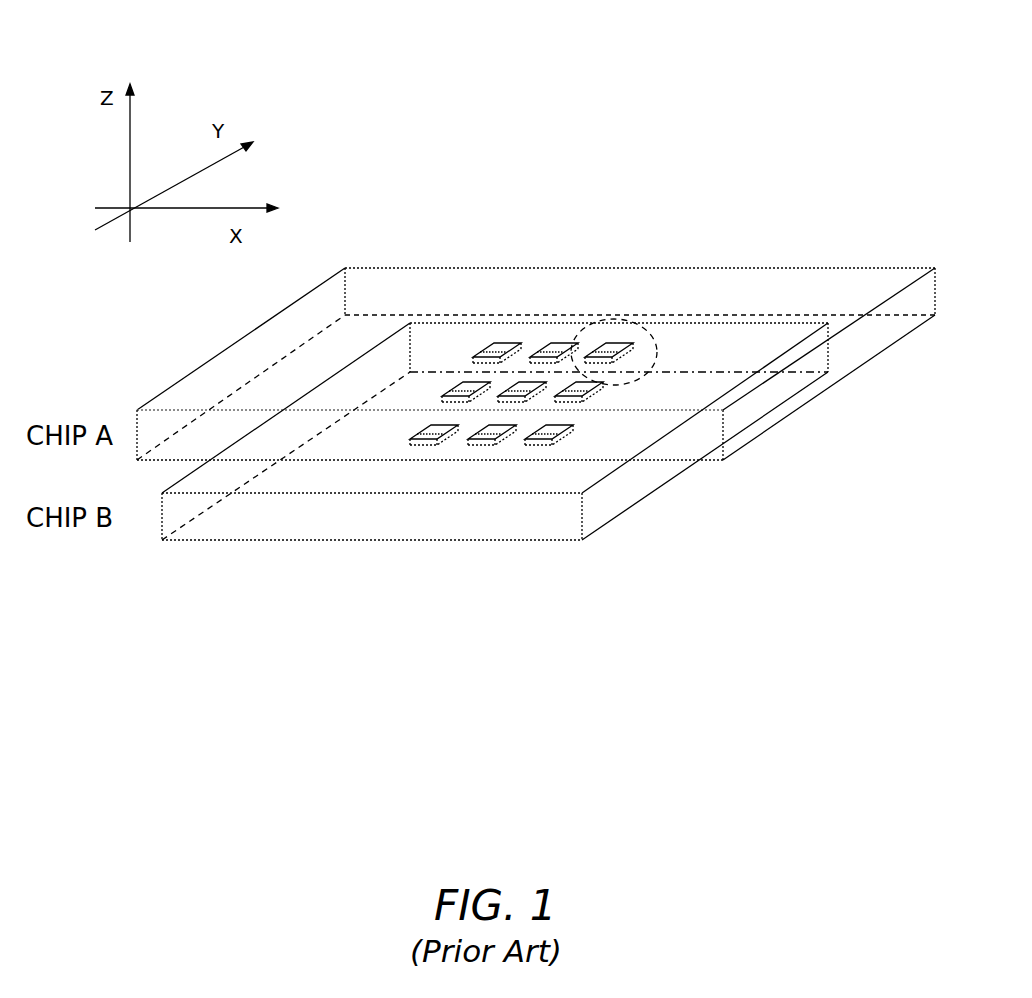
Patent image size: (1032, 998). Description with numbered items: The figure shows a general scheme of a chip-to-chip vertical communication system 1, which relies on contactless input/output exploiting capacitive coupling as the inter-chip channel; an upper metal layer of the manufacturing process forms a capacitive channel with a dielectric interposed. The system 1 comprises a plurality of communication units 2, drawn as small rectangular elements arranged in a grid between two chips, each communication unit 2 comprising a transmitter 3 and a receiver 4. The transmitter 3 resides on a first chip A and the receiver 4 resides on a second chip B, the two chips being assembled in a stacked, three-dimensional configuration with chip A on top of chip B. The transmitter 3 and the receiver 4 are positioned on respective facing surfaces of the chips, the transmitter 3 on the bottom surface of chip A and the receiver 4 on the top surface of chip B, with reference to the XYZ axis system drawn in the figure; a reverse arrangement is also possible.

The chip-to-chip communication system 1 is at (672, 144).
The communication unit 2 is at (585, 330).
The transmitter 3 is at (630, 328).
The receiver 4 is at (628, 370).